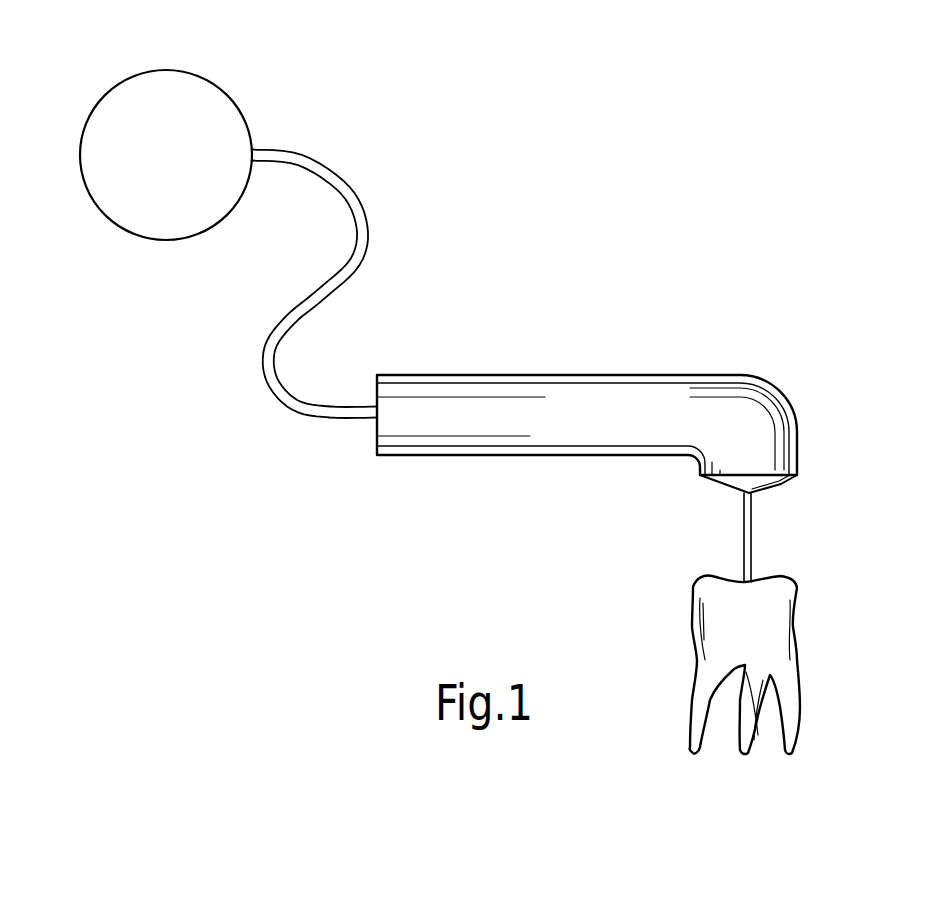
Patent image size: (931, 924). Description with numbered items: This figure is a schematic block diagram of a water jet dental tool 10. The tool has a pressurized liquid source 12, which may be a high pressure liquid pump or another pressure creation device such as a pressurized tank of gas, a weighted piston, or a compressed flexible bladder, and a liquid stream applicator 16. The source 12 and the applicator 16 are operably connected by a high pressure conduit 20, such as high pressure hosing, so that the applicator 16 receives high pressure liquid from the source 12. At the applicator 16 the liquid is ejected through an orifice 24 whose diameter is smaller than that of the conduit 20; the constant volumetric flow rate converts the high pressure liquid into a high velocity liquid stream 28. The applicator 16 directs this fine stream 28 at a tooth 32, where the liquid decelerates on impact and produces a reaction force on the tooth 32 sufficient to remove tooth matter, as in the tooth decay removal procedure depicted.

The water jet dental tool 10 is at (604, 233).
The pressurized liquid source 12 is at (165, 70).
The liquid stream applicator 16 is at (697, 375).
The high pressure conduit 20 is at (347, 276).
The orifice 24 is at (768, 493).
The liquid stream 28 is at (752, 540).
The tooth 32 is at (693, 592).